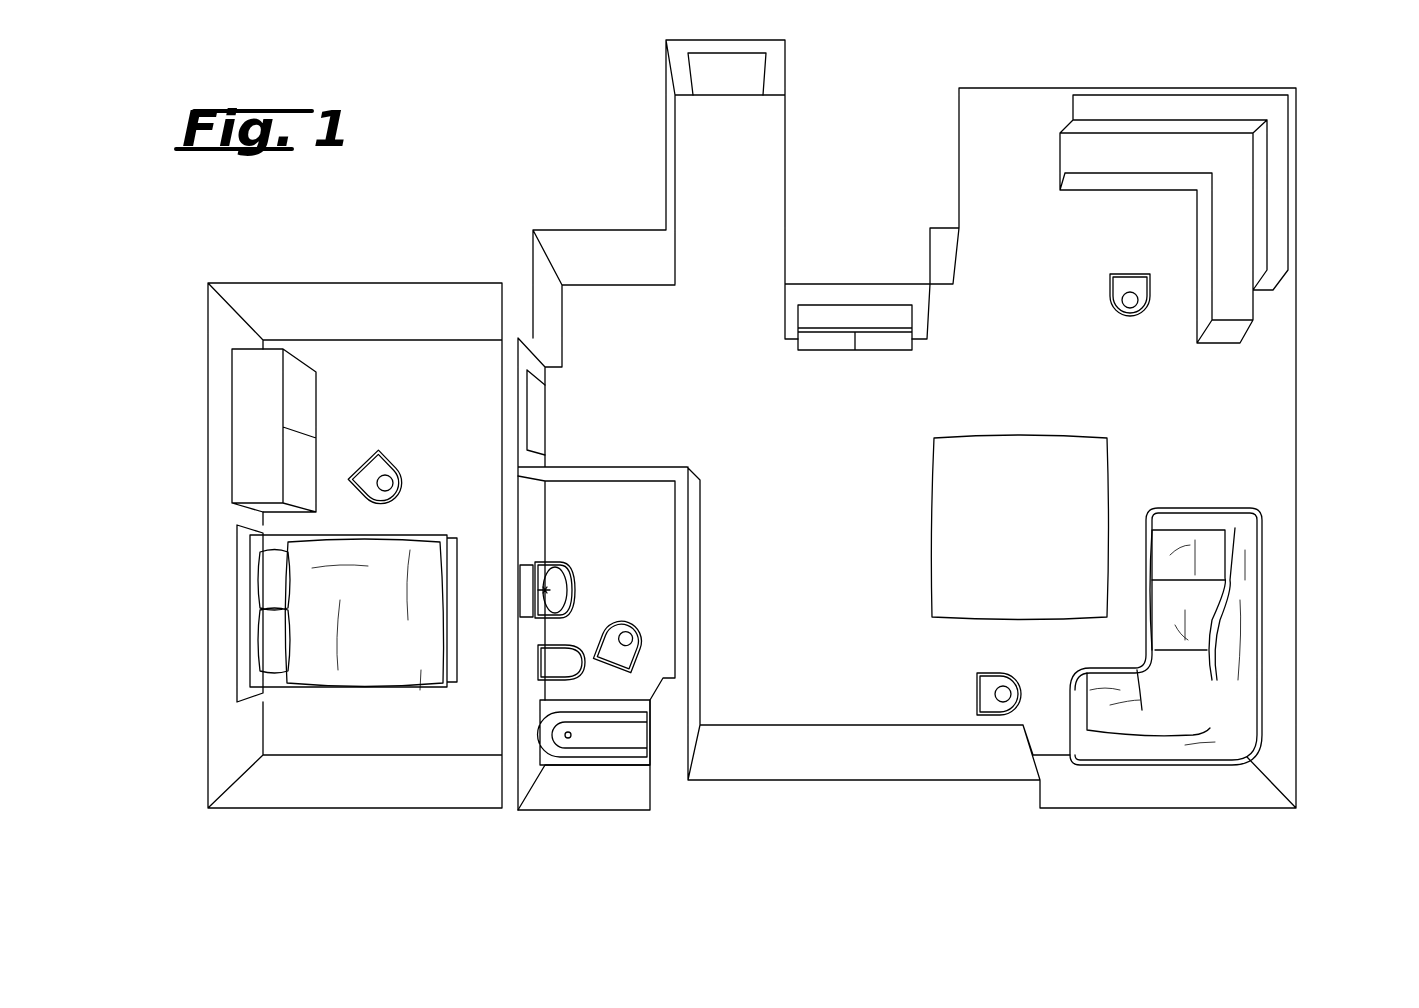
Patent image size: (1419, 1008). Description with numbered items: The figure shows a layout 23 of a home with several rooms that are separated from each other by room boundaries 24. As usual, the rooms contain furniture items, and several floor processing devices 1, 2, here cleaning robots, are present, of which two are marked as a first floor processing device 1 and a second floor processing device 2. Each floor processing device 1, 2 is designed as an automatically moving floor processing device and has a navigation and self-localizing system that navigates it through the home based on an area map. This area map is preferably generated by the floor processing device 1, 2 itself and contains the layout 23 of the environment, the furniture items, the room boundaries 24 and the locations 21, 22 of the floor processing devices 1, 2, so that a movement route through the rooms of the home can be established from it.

The first floor processing device 1 is at (1132, 280).
The second floor processing device 2 is at (985, 695).
The location of the first floor processing device 21 is at (1143, 247).
The location of the second floor processing device 22 is at (1096, 600).
The layout 23 is at (208, 500).
The room boundaries 24 is at (583, 810).